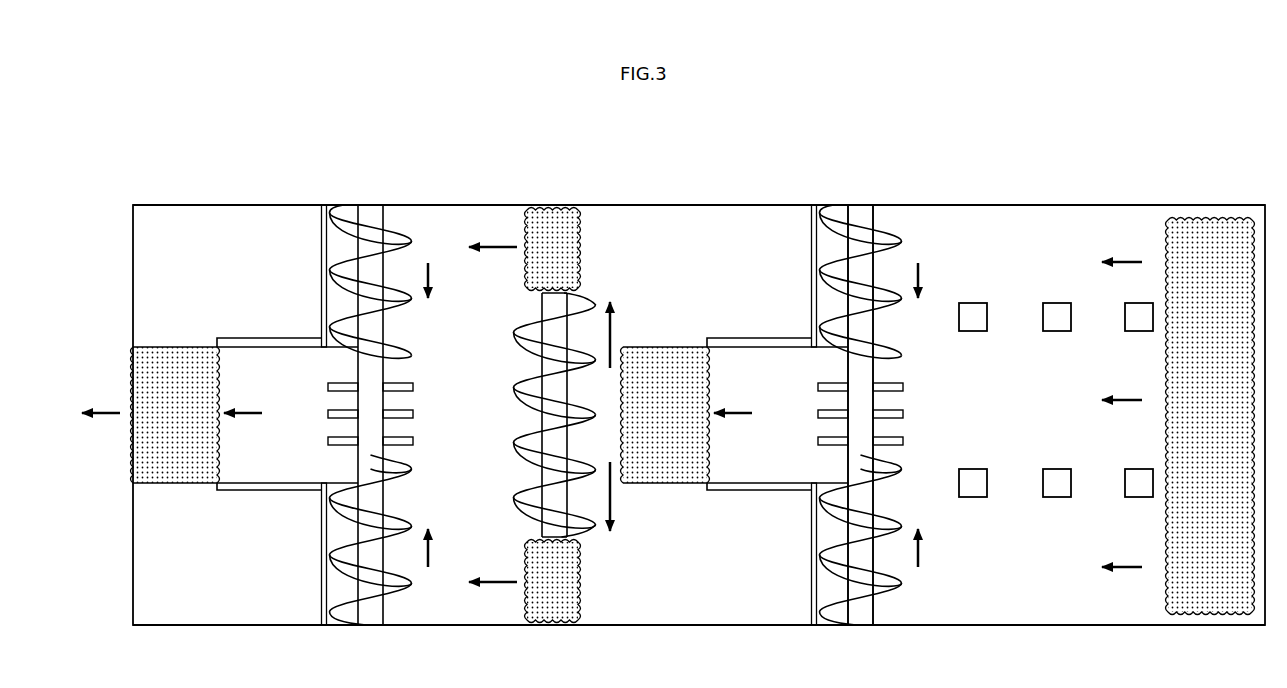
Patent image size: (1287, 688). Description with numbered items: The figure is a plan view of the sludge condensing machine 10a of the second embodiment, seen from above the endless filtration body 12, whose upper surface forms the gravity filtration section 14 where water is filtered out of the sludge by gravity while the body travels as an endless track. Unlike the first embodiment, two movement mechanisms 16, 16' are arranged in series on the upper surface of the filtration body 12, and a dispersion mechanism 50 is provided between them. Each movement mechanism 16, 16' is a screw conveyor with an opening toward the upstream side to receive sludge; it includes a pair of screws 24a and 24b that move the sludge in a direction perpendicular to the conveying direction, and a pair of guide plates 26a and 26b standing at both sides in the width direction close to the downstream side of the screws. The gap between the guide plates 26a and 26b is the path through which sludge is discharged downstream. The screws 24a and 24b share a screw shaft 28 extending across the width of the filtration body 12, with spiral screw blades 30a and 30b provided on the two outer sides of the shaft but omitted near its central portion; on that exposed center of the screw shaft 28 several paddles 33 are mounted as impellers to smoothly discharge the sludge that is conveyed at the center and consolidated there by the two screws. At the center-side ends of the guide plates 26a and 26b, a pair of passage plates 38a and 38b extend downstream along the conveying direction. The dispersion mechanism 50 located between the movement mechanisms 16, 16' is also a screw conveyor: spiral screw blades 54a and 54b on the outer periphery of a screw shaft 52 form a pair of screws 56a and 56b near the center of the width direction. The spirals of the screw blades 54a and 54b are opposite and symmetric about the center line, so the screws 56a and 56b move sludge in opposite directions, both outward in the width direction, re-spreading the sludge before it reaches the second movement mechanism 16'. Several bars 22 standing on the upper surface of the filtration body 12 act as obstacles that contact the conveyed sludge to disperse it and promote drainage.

The sludge condensing machine 10a is at (216, 161).
The filtration body 12 is at (972, 190).
The gravity filtration section 14 is at (988, 645).
The movement mechanism 16 is at (643, 408).
The second movement mechanism 16' is at (866, 384).
The bars 22 is at (1056, 302).
The screw 24a is at (453, 520).
The screw 24b is at (431, 339).
The guide plate 26a is at (321, 581).
The guide plate 26b is at (321, 268).
The screw shaft 28 is at (378, 500).
The screw blade 30a is at (398, 578).
The screw blade 30b is at (398, 250).
The paddles 33 is at (413, 412).
The passage plate 38a is at (240, 492).
The passage plate 38b is at (253, 338).
The dispersion mechanism 50 is at (585, 405).
The screw shaft 52 is at (545, 412).
The screw blade 54a is at (524, 503).
The screw blade 54b is at (536, 331).
The screw 56a is at (629, 531).
The screw 56b is at (626, 322).